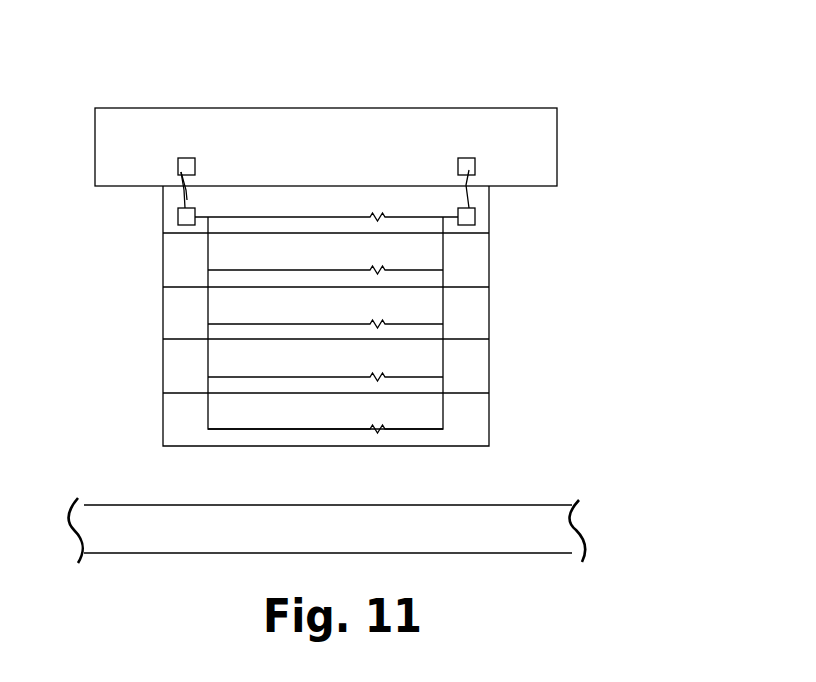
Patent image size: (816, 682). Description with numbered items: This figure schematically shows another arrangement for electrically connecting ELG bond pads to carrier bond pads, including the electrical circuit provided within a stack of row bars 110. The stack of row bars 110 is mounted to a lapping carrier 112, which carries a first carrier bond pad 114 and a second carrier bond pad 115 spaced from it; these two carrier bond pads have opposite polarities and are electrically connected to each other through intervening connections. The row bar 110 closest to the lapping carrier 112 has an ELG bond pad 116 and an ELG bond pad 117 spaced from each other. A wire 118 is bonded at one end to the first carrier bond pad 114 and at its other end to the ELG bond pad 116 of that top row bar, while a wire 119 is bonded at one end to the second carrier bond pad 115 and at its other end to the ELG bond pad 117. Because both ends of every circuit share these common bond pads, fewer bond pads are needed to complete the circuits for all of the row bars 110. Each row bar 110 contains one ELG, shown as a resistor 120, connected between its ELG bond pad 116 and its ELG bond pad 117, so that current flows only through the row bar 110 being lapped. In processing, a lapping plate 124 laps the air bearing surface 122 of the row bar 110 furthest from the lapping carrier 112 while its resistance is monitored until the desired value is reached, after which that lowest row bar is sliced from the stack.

The row bar 110 is at (170, 222).
The lapping carrier 112 is at (540, 147).
The first carrier bond pad 114 is at (181, 172).
The second carrier bond pad 115 is at (469, 170).
The ELG bond pad 116 is at (177, 210).
The ELG bond pad 117 is at (475, 214).
The wire 118 is at (183, 194).
The wire 119 is at (472, 183).
The resistor 120 is at (402, 430).
The air bearing surface 122 is at (200, 452).
The lapping plate 124 is at (558, 532).